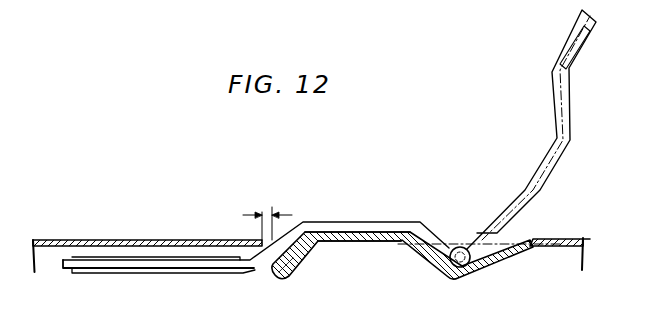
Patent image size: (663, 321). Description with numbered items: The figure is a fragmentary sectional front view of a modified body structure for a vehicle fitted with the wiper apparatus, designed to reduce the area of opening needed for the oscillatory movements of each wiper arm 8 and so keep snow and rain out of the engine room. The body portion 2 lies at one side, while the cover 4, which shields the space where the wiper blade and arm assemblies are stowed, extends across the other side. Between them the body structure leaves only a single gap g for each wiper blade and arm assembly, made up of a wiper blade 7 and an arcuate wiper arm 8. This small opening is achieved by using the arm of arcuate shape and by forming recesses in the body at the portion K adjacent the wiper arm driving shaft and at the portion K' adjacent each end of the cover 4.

The body portion 2 is at (575, 239).
The cover 4 is at (163, 242).
The wiper blade 7 is at (152, 273).
The wiper arm 8 is at (374, 224).
The gap g is at (267, 210).
The body portion adjacent the wiper arm driving shaft K is at (523, 138).
The body portion adjacent the cover end K' is at (300, 272).